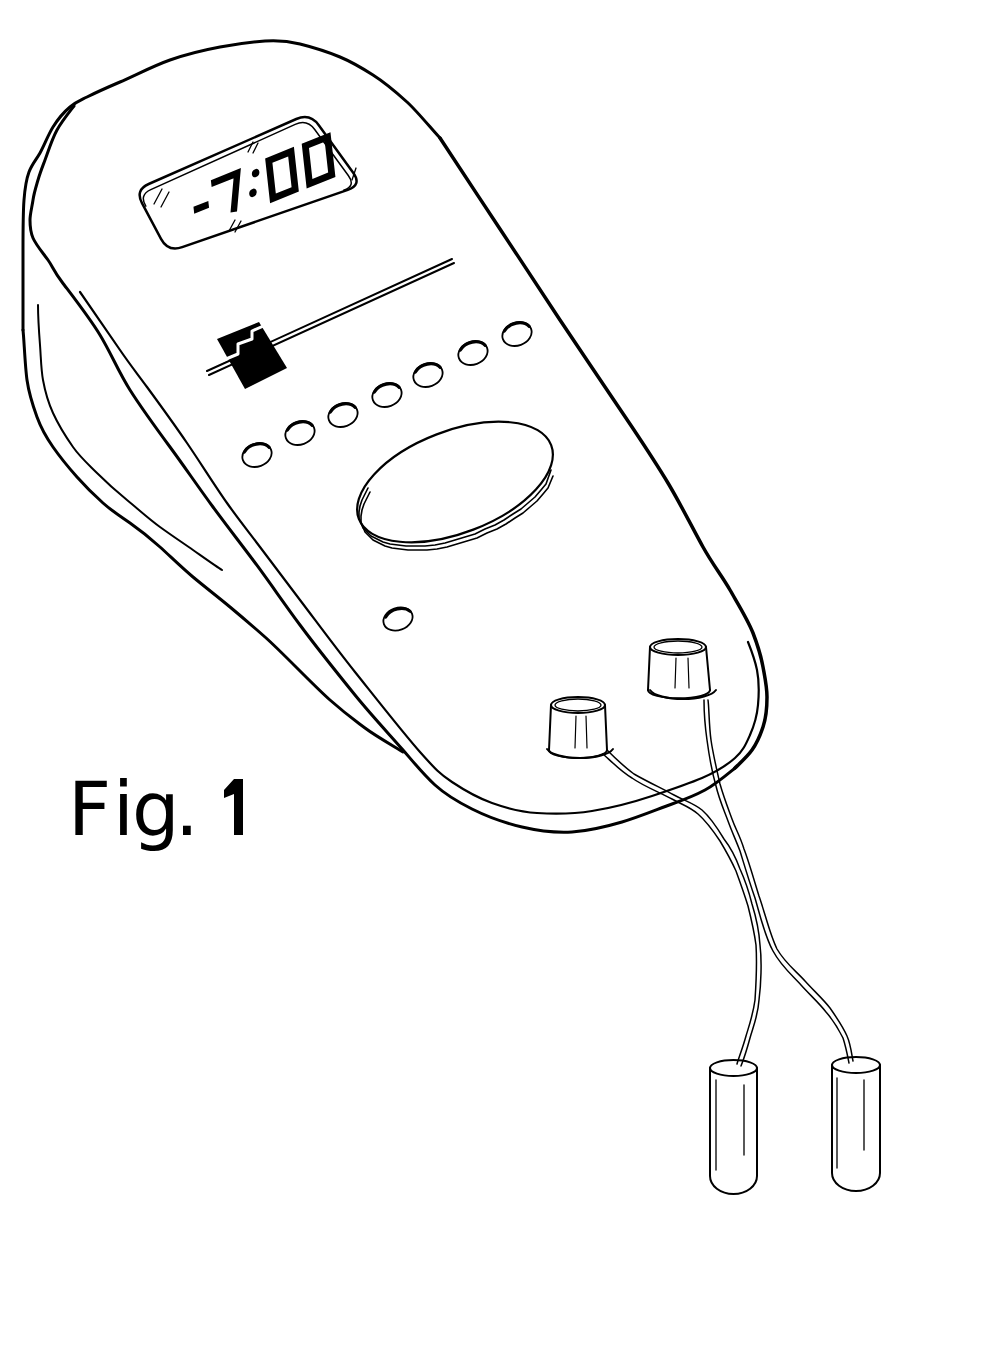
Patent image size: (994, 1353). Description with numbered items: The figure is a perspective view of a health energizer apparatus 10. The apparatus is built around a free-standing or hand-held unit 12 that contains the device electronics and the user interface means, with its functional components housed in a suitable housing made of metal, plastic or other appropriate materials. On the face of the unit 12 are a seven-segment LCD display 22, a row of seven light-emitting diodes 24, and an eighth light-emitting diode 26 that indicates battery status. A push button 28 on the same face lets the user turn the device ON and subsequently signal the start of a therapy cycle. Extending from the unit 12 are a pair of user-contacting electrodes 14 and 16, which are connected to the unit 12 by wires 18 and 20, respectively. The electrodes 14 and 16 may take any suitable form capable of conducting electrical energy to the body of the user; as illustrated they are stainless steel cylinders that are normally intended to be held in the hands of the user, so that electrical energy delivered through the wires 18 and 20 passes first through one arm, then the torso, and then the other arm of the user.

The health energizer apparatus 10 is at (241, 580).
The hand-held unit 12 is at (481, 244).
The electrode 14 is at (727, 1117).
The electrode 16 is at (860, 1143).
The wire 18 is at (749, 1013).
The wire 20 is at (790, 967).
The seven-segment LCD display 22 is at (350, 155).
The light-emitting diodes 24 is at (526, 326).
The eighth light-emitting diode 26 is at (387, 627).
The push button 28 is at (525, 440).